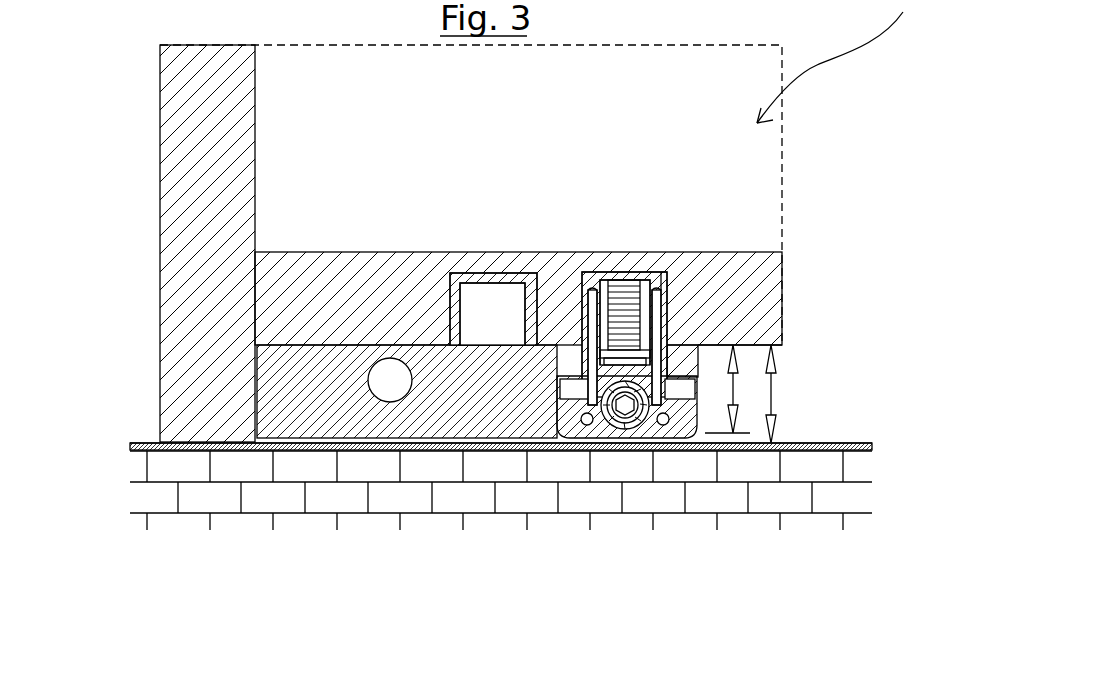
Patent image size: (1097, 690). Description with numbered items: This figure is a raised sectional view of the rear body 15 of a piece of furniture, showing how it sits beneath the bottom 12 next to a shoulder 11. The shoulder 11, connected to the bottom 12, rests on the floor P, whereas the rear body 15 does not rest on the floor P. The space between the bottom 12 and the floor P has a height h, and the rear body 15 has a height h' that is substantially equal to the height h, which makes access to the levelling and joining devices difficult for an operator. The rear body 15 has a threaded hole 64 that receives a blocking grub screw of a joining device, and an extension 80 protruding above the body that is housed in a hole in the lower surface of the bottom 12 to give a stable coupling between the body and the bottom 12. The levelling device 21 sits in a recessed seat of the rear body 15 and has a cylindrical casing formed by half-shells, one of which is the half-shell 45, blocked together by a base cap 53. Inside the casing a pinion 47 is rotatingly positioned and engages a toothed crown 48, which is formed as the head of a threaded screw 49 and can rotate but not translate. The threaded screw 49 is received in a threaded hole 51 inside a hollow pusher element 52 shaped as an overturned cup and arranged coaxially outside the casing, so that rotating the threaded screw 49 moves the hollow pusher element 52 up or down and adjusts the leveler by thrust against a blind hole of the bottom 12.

The shoulder 11 is at (220, 169).
The bottom 12 is at (360, 314).
The rear body 15 is at (288, 463).
The levelling device 21 is at (686, 317).
The half-shell 45 is at (575, 443).
The pinion 47 is at (630, 443).
The toothed crown 48 is at (660, 443).
The threaded screw 49 is at (622, 280).
The threaded hole 51 is at (664, 272).
The hollow pusher element 52 is at (590, 272).
The base cap 53 is at (690, 443).
The threaded hole 64 is at (397, 365).
The extension 80 is at (484, 283).
The floor P is at (317, 490).
The height h is at (853, 394).
The height h' is at (807, 389).